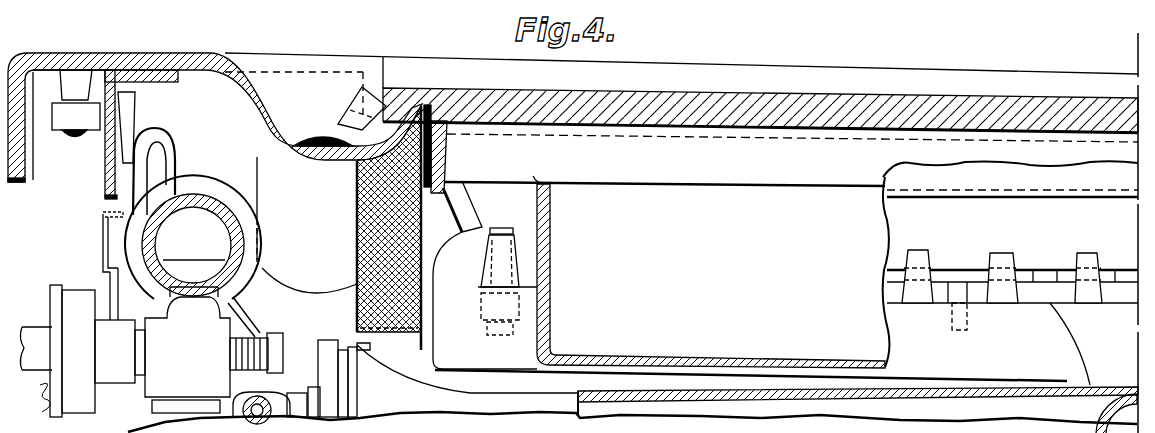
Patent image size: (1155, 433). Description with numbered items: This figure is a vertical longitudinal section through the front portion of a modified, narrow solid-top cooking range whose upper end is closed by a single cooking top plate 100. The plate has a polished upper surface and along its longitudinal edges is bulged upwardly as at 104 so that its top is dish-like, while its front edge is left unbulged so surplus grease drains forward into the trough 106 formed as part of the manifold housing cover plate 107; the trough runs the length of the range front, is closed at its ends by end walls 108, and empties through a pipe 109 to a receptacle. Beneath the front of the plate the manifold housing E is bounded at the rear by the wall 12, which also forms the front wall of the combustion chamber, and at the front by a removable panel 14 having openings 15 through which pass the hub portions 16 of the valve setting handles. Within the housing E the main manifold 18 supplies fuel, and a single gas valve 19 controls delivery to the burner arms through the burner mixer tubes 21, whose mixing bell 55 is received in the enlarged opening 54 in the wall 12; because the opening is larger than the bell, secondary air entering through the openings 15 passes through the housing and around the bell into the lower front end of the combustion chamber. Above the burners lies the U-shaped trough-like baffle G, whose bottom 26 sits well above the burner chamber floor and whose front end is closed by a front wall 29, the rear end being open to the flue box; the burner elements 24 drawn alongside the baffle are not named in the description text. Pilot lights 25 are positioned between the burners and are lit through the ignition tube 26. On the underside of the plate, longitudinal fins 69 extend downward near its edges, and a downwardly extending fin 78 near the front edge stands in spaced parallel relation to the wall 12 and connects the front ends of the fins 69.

The cooking top plate 100 is at (820, 100).
The upward bulge 104 is at (760, 99).
The manifold housing cover plate 107 is at (137, 40).
The end walls 108 is at (247, 63).
The trough 106 is at (235, 128).
The pipe 109 is at (316, 133).
The wall 12 is at (358, 225).
The downwardly extending fin 78 is at (446, 151).
The bottom of baffle / ignition tube 26 is at (464, 178).
The front wall 29 is at (551, 232).
The fins 69 is at (533, 176).
The burner pilot lights 25 is at (503, 233).
The contact pins 24 is at (996, 253).
The burner mixer tubes 21 is at (843, 397).
The opening 54 is at (363, 343).
The mixing bell 55 is at (310, 404).
The removable panel 14 is at (102, 247).
The openings 15 is at (110, 290).
The hub portions 16 is at (82, 351).
The gas valve 19 is at (214, 355).
The main manifold 18 is at (200, 206).
The manifold housing E is at (198, 248).
The trough-like baffle G is at (717, 229).